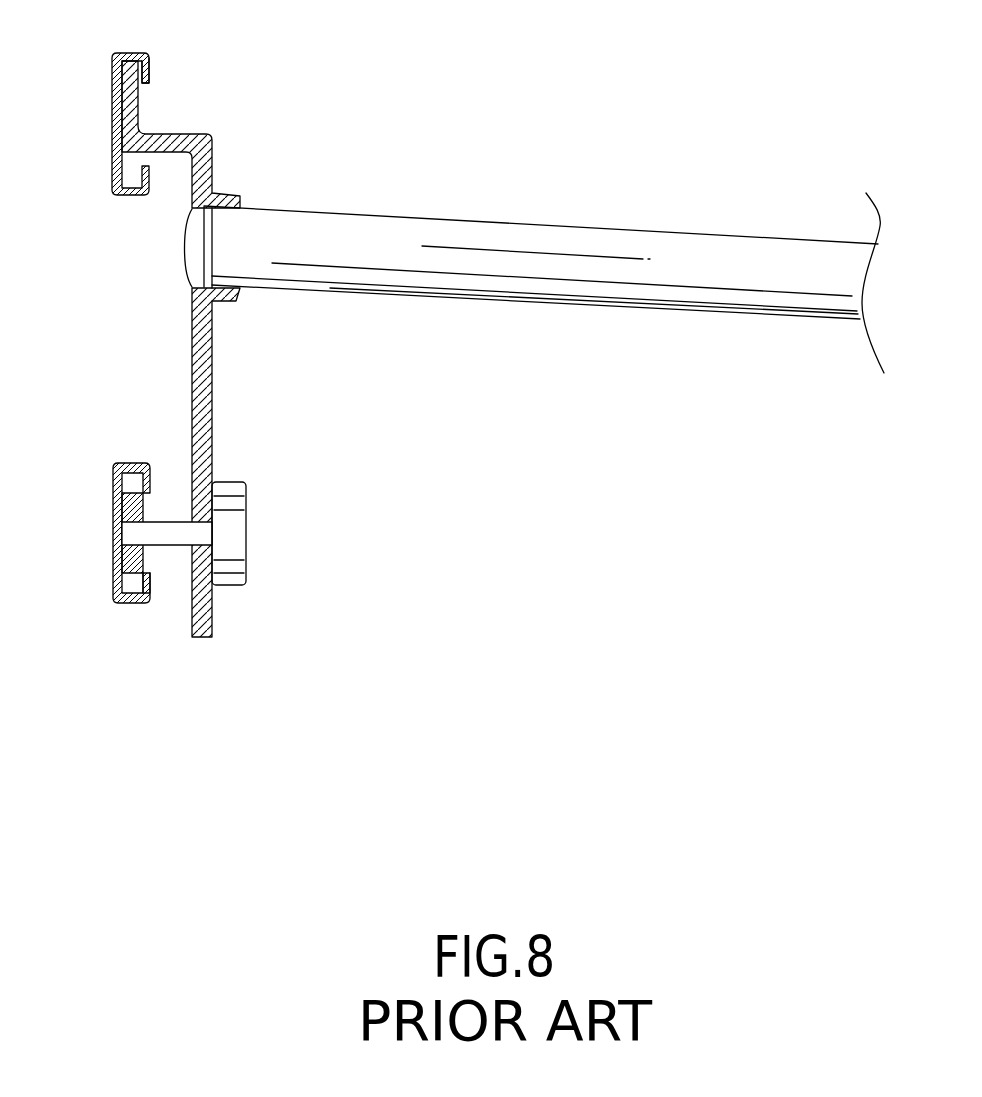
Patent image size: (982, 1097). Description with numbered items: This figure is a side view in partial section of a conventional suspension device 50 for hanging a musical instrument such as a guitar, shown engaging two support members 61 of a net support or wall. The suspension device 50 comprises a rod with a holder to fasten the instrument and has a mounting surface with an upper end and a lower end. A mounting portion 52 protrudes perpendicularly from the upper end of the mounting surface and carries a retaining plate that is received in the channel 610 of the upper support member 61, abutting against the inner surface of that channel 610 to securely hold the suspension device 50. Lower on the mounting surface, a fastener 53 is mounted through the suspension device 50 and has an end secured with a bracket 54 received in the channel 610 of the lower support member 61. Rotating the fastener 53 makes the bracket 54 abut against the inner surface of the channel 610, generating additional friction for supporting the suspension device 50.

The suspension device 50 is at (210, 180).
The mounting portion 52 is at (136, 119).
The fastener 53 is at (163, 538).
The bracket 54 is at (128, 511).
The support member 61 is at (115, 158).
The channel 610 is at (148, 73).